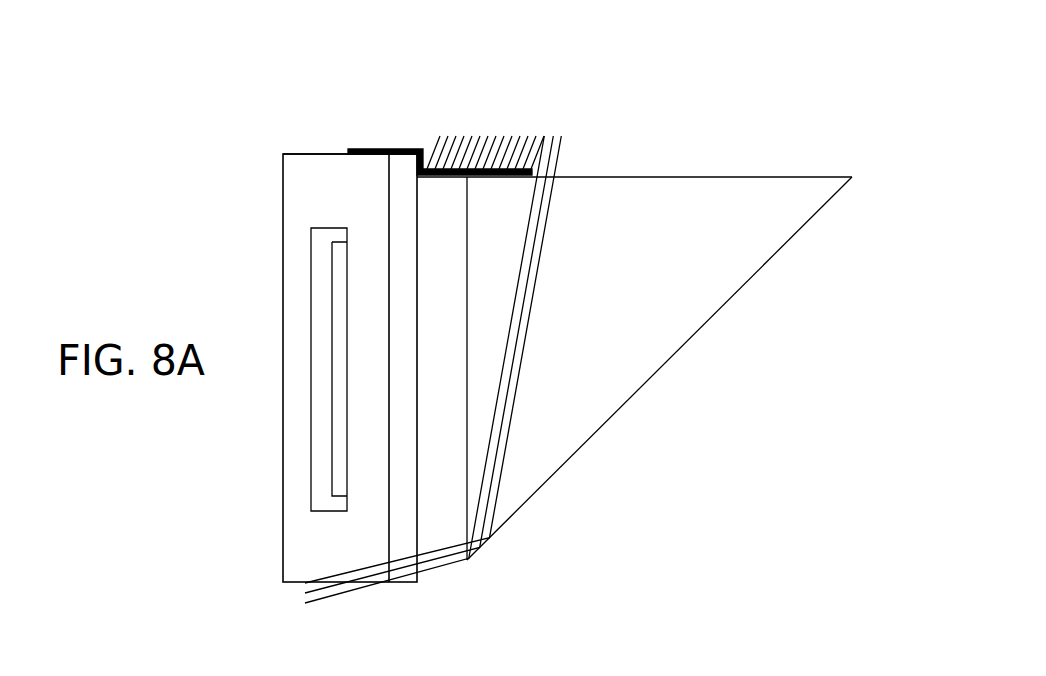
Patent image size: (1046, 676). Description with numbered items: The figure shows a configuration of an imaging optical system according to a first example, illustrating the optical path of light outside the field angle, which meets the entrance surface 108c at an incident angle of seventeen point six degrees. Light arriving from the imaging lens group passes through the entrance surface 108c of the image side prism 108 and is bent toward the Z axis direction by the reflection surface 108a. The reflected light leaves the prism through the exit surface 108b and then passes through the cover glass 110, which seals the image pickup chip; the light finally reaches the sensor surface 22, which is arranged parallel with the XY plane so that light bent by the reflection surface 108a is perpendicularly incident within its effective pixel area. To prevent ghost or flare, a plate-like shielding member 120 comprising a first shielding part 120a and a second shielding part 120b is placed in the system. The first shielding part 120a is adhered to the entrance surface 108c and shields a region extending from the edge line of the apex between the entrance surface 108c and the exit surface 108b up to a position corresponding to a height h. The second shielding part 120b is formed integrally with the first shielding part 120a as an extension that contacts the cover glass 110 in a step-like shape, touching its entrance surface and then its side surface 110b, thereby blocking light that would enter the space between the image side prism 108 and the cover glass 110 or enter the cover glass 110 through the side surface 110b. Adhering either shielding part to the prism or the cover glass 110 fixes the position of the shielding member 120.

The sensor surface 22 is at (347, 472).
The image side prism 108 is at (697, 313).
The reflection surface 108a is at (590, 433).
The exit surface 108b is at (467, 473).
The entrance surface 108c is at (790, 177).
The cover glass 110 is at (405, 581).
The side surface of the cover glass 110b is at (402, 156).
The shielding member 120 is at (402, 105).
The first shielding part 120a is at (520, 140).
The second shielding part 120b is at (363, 148).